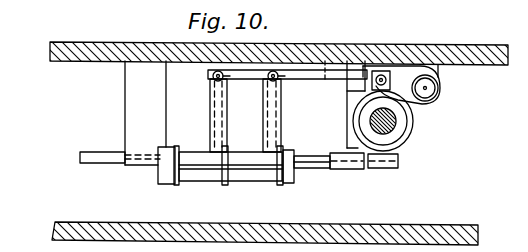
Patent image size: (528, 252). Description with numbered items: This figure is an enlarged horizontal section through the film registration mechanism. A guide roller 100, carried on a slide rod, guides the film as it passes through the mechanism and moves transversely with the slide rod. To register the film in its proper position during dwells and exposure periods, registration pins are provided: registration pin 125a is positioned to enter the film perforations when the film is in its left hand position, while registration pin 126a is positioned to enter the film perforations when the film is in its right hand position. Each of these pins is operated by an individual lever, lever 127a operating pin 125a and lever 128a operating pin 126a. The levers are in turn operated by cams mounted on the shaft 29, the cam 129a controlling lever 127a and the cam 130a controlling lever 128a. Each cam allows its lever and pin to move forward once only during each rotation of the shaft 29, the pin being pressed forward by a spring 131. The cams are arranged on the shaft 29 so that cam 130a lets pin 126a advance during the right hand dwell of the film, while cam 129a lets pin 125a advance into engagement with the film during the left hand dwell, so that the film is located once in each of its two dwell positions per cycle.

The guide roller 100 is at (188, 163).
The registration pin 125a is at (207, 107).
The registration pin 126a is at (283, 112).
The lever 127a is at (248, 80).
The lever 128a is at (311, 80).
The cam 129a is at (408, 141).
The cam 130a is at (430, 104).
The spring 131 is at (388, 67).
The shaft 29 is at (396, 120).